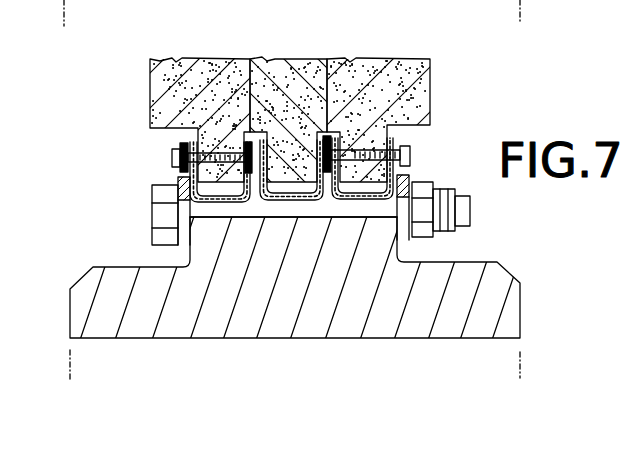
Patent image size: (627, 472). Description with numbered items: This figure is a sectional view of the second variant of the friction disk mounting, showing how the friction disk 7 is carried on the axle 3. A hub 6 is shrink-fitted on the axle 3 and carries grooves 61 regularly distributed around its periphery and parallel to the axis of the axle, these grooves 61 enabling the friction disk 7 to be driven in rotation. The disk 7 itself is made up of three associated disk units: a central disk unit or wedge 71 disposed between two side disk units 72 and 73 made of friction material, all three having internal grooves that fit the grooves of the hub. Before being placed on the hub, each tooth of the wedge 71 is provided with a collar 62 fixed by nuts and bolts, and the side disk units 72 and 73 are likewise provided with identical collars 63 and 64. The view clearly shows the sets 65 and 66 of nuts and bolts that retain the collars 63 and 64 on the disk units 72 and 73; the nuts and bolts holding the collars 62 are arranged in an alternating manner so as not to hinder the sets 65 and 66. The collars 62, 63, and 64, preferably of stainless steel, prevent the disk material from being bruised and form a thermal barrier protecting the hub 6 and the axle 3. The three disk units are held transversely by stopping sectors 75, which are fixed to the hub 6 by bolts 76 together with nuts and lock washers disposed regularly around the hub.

The friction disk 7 is at (141, 69).
The side disk unit 72 is at (185, 95).
The central disk unit or wedge 71 is at (292, 87).
The side disk unit 73 is at (408, 88).
The set of nuts and bolts 65 is at (178, 146).
The set of nuts and bolts 66 is at (420, 139).
The stopping sector 75 is at (408, 176).
The bolt 76 is at (165, 214).
The hub 6 is at (100, 300).
The axle 3 is at (463, 347).
The groove 61 is at (273, 220).
The collar 62 is at (313, 220).
The collar 63 is at (222, 220).
The collar 64 is at (373, 220).